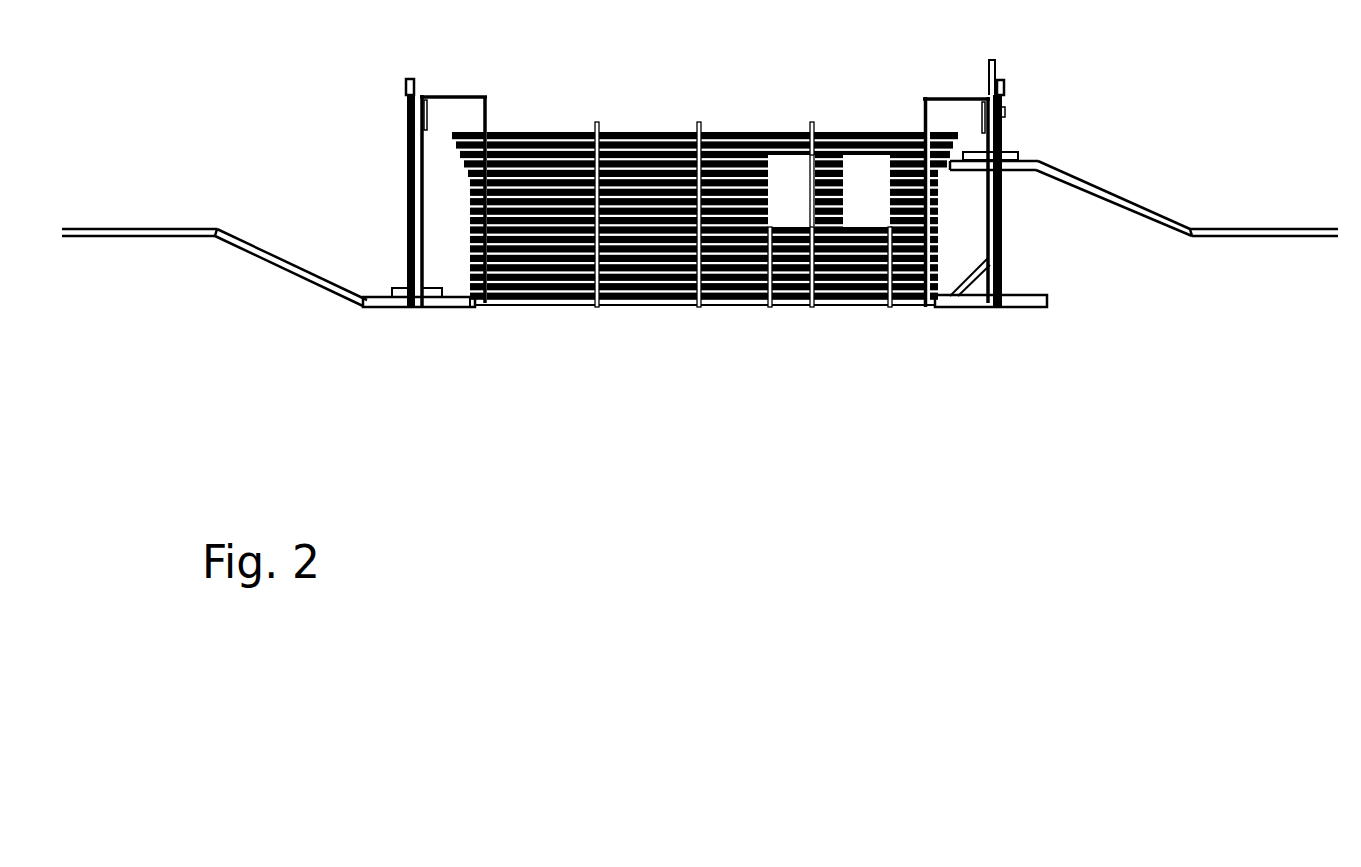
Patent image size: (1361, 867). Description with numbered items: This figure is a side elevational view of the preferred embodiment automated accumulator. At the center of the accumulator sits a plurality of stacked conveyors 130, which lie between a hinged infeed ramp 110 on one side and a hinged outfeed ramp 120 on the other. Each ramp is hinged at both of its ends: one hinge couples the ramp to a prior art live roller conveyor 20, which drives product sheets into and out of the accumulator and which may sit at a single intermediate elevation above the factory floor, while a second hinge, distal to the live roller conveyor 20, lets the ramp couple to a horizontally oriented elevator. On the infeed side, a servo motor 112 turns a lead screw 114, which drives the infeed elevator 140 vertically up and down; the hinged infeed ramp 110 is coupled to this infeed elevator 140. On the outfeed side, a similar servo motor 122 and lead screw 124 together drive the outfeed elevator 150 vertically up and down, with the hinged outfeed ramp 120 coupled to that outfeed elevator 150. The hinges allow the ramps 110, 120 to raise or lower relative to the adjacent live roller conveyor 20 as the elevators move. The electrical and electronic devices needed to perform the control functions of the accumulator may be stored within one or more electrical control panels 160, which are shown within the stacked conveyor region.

The live roller conveyor 20 is at (140, 243).
The hinged infeed ramp 110 is at (263, 262).
The servo motor 112 is at (403, 92).
The lead screw 114 is at (404, 182).
The infeed elevator 140 is at (387, 290).
The stacked conveyors 130 is at (535, 132).
The electrical control panel 160 is at (868, 175).
The servo motor 122 is at (1007, 87).
The lead screw 124 is at (1007, 247).
The outfeed elevator 150 is at (1020, 152).
The hinged outfeed ramp 120 is at (1135, 218).